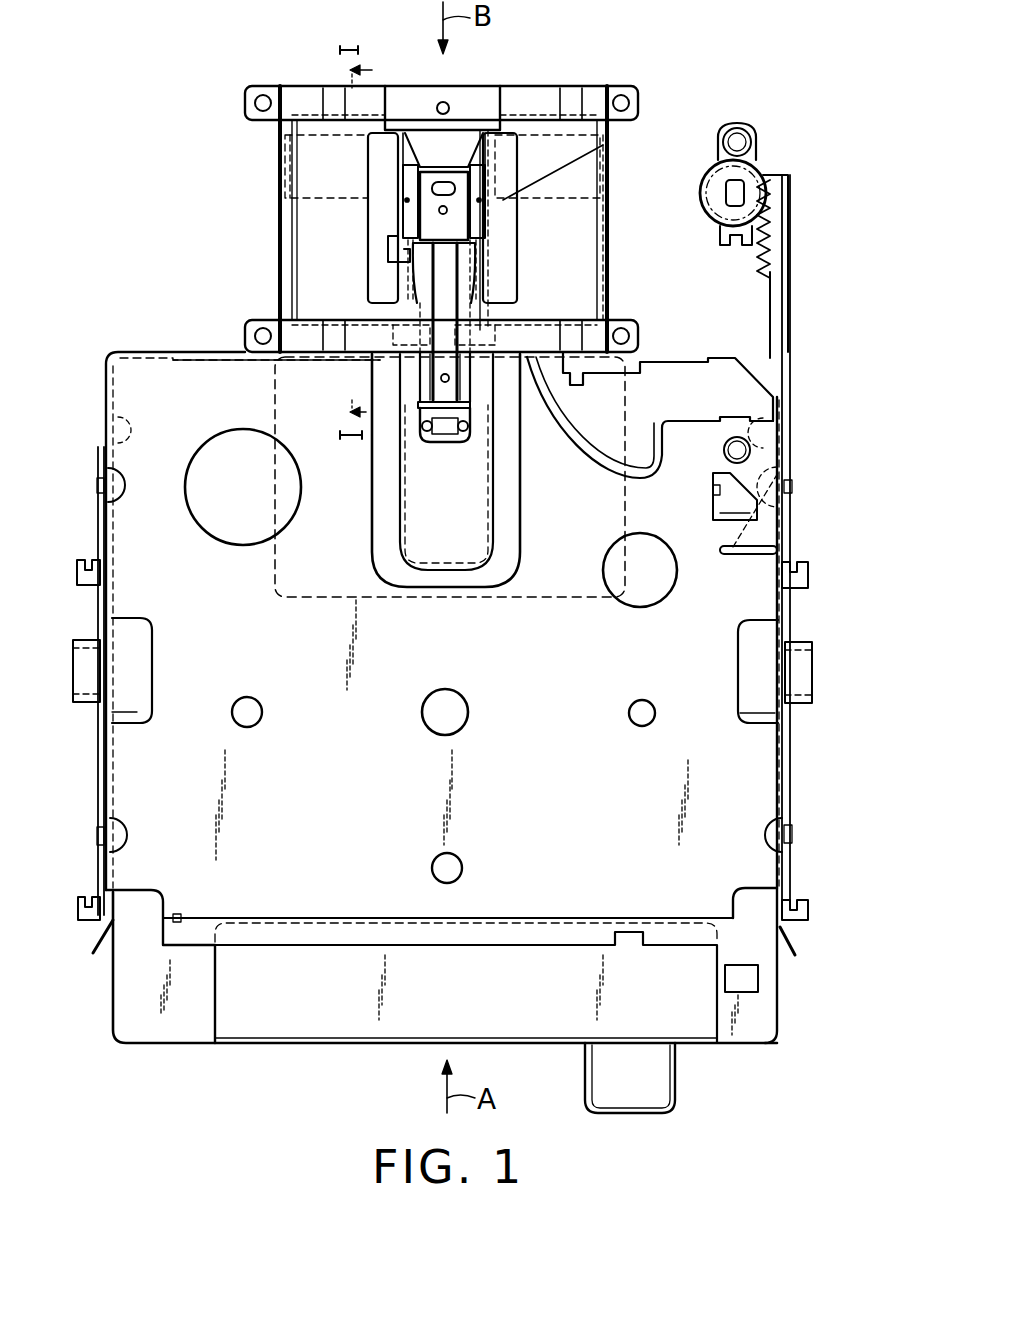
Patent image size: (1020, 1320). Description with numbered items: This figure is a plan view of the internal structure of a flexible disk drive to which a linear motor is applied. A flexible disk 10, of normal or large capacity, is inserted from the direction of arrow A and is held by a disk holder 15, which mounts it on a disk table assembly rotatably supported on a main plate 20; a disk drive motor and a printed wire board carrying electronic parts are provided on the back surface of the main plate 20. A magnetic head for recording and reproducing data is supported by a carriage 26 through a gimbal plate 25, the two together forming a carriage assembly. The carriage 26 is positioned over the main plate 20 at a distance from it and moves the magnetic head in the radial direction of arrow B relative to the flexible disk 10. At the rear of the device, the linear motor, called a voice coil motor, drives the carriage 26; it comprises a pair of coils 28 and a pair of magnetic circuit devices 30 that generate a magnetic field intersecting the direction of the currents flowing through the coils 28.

The flexible disk 10 is at (352, 1028).
The disk holder 15 is at (542, 947).
The main plate 20 is at (783, 772).
The gimbal plate 25 is at (440, 443).
The carriage 26 is at (421, 378).
The coils 28 is at (280, 198).
The magnetic circuit devices 30 is at (617, 252).